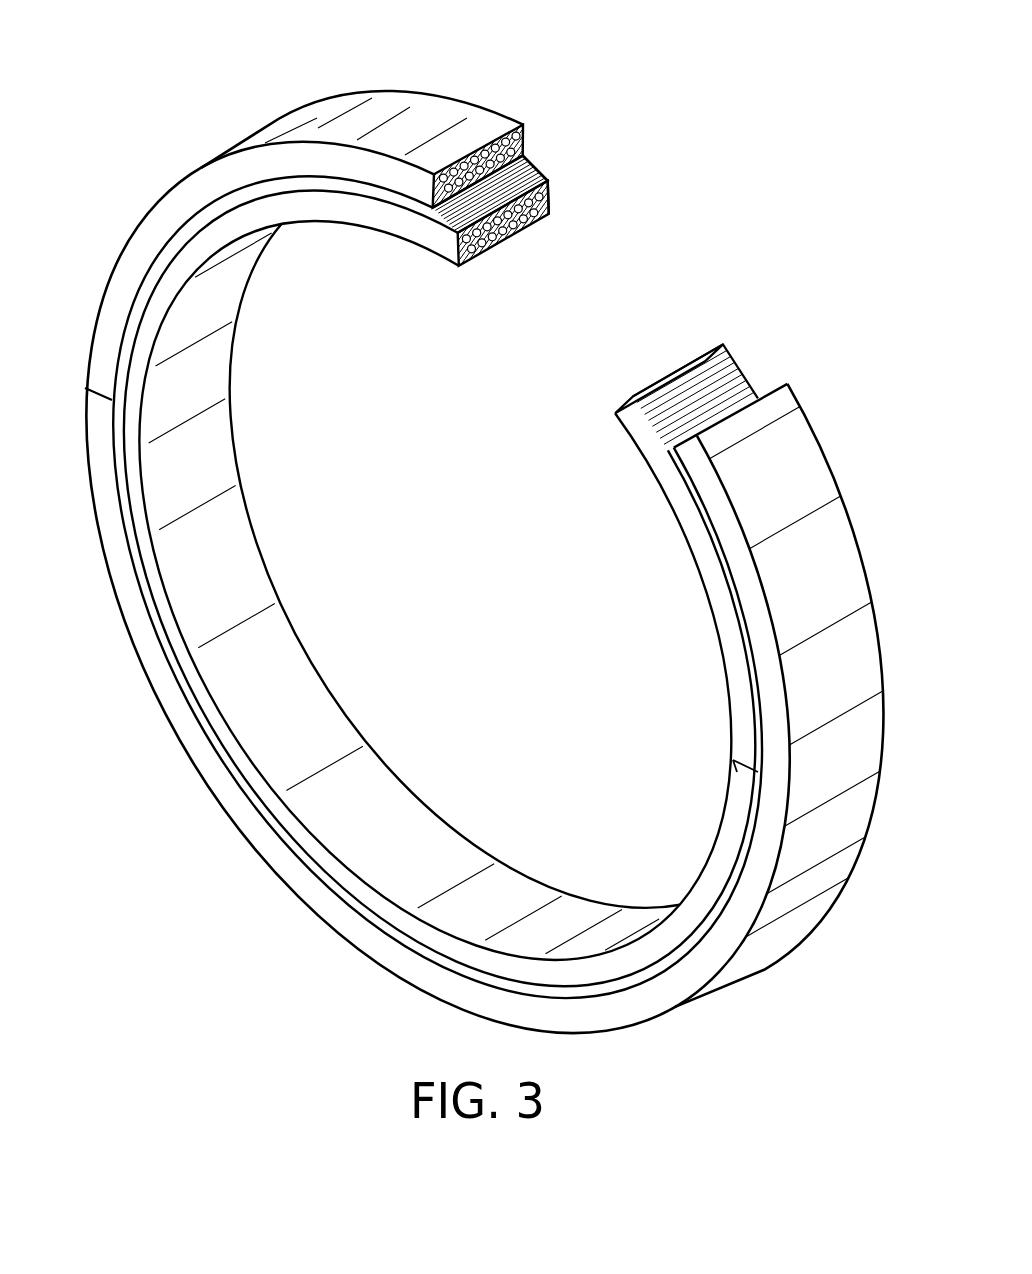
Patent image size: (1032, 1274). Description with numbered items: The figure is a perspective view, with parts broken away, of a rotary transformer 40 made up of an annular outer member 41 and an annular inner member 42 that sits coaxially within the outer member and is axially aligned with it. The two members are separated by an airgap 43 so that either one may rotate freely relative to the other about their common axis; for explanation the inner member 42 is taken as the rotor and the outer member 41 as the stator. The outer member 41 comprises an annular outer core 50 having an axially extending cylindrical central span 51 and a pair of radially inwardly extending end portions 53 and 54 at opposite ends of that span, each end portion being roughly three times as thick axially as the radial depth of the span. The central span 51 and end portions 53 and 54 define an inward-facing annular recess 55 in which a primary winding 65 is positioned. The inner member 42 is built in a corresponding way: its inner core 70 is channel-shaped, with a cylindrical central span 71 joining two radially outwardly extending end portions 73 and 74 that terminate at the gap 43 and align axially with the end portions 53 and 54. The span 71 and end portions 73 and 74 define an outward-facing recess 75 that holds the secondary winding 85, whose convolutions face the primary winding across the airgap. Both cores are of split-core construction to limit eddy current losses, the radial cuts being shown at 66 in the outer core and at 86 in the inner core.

The rotary transformer 40 is at (140, 84).
The annular outer member 41 is at (157, 198).
The annular inner member 42 is at (726, 702).
The airgap 43 is at (220, 223).
The annular outer core 50 is at (795, 485).
The cylindrical central span 51 is at (466, 166).
The radially inwardly extending end portion 53 is at (397, 250).
The radially inwardly extending end portion 54 is at (518, 133).
The annular recess 55 is at (530, 160).
The primary winding 65 is at (462, 262).
The radial cut 66 is at (103, 382).
The inner core 70 is at (250, 598).
The cylindrical central span 71 is at (520, 245).
The radially outwardly extending end portion 73 is at (663, 431).
The radially outwardly extending end portion 74 is at (740, 375).
The radially outwardly facing recess 75 is at (522, 195).
The secondary winding 85 is at (550, 192).
The radial cut 86 is at (738, 768).